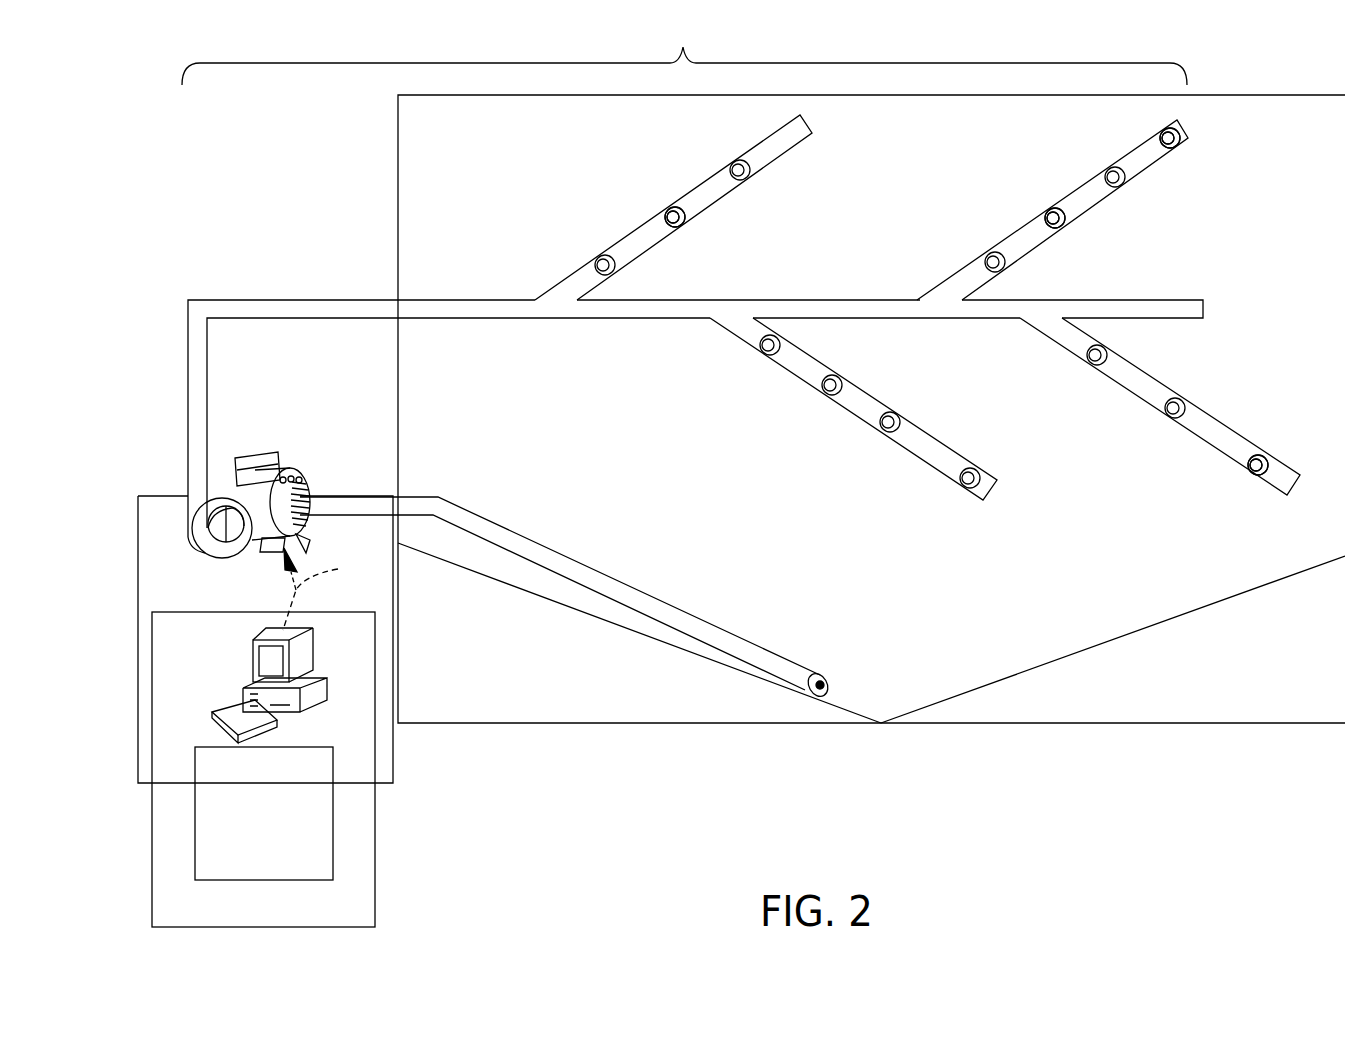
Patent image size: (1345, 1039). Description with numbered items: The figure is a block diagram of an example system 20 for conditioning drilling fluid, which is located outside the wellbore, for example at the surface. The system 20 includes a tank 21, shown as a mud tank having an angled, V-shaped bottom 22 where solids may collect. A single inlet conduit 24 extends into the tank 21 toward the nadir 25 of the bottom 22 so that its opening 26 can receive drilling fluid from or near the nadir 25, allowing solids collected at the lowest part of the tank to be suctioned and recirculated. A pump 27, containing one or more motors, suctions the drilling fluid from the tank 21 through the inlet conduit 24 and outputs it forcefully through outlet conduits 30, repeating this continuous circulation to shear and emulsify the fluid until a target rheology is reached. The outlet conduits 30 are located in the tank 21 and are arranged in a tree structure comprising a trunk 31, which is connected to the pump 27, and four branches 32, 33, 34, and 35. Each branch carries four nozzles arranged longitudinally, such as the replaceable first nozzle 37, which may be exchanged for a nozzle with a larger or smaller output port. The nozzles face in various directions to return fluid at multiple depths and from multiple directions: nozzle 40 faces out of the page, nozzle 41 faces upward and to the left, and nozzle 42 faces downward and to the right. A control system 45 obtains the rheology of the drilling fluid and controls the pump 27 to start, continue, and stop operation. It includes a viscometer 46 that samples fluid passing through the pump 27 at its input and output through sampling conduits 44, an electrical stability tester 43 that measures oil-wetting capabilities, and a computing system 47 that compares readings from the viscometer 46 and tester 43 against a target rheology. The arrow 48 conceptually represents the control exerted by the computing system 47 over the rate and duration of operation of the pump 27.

The system 20 is at (176, 231).
The tank 21 is at (1290, 100).
The bottom 22 is at (1120, 645).
The inlet conduit 24 is at (675, 612).
The nadir 25 is at (880, 728).
The opening 26 is at (825, 670).
The pump 27 is at (283, 470).
The outlet conduits 30 is at (684, 46).
The trunk 31 is at (490, 300).
The branch 32 is at (782, 158).
The branch 33 is at (1093, 205).
The branch 34 is at (932, 435).
The branch 35 is at (1215, 418).
The first nozzle 37 is at (687, 222).
The nozzle 40 is at (1053, 208).
The nozzle 41 is at (1258, 475).
The nozzle 42 is at (1180, 138).
The electrical stability tester 43 is at (195, 830).
The sampling conduits 44 is at (138, 618).
The control system 45 is at (375, 850).
The viscometer 46 is at (330, 763).
The computing system 47 is at (258, 665).
The arrow 48 is at (323, 589).